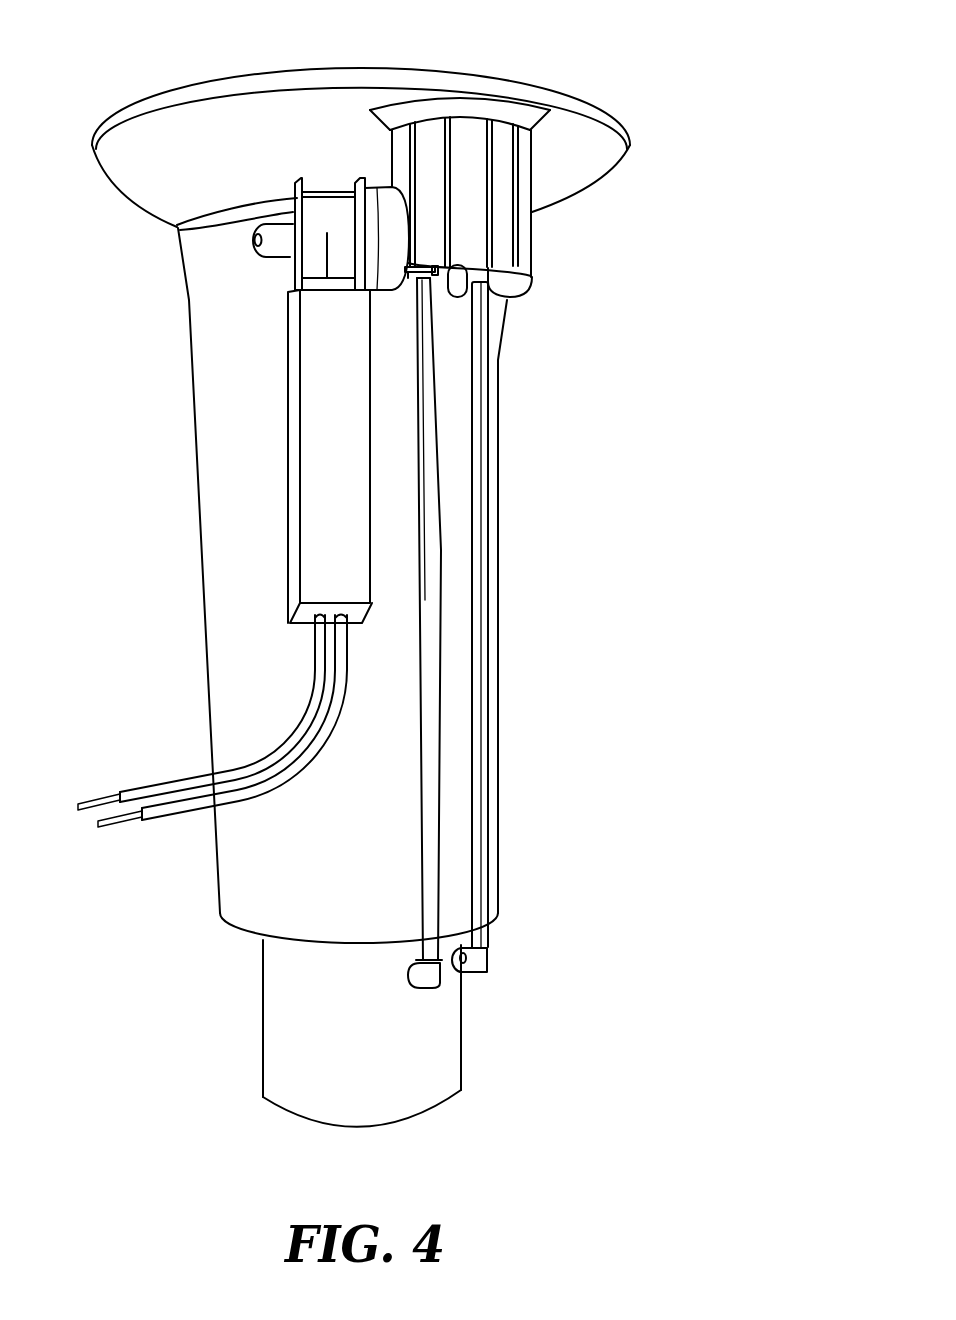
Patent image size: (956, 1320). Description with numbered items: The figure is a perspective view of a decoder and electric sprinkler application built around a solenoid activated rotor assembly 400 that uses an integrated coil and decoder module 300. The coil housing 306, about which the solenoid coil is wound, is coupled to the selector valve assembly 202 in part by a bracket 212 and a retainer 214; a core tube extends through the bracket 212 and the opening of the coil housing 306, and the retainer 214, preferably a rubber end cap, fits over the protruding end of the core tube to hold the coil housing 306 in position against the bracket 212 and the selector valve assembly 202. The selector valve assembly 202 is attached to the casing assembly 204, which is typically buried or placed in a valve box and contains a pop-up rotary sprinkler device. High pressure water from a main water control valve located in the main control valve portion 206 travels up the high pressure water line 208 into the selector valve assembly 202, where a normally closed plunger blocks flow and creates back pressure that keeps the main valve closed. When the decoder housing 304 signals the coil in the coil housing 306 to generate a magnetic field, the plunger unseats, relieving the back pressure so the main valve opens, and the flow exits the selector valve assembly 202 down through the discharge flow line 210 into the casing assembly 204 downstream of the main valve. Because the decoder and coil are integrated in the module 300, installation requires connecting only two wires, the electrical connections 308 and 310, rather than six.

The solenoid activated rotor assembly 400 is at (463, 38).
The selector valve assembly 202 is at (393, 228).
The casing assembly 204 is at (498, 477).
The main control valve portion 206 is at (290, 1117).
The high pressure water line 208 is at (480, 378).
The discharge flow line 210 is at (432, 573).
The bracket 212 is at (177, 230).
The retainer 214 is at (256, 251).
The integrated coil and decoder module 300 is at (248, 415).
The decoder housing 304 is at (300, 463).
The coil housing 306 is at (320, 210).
The electrical connection 308 is at (184, 813).
The electrical connection 310 is at (186, 778).